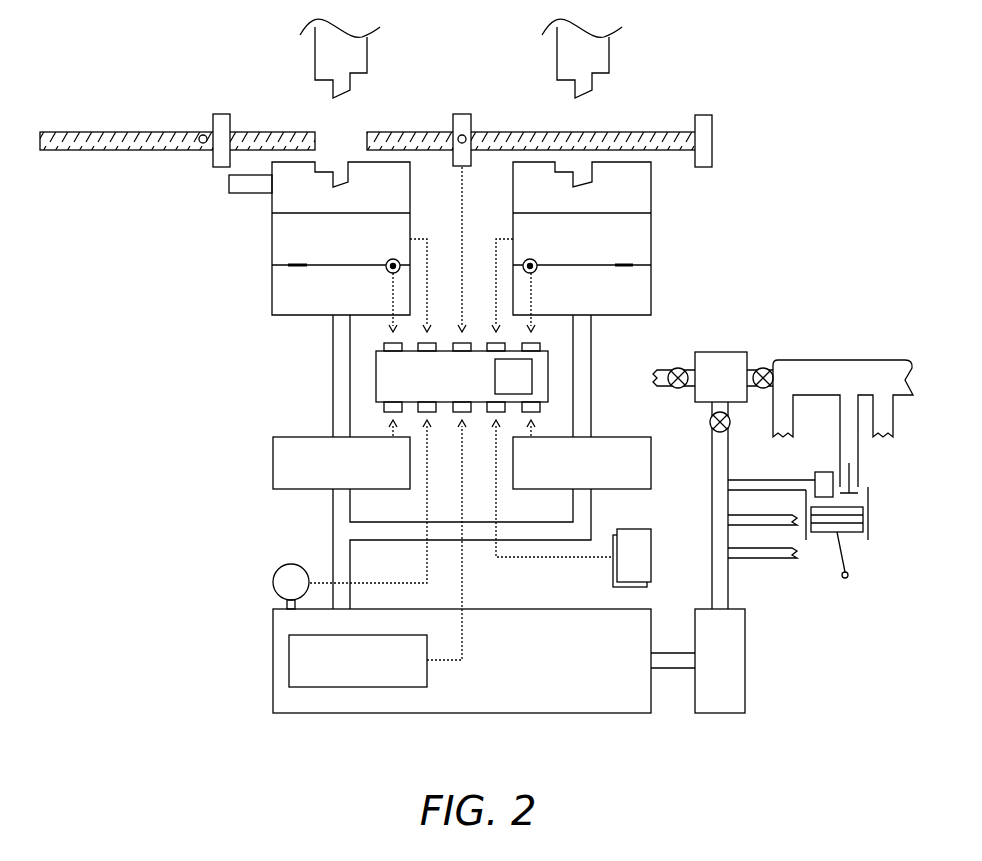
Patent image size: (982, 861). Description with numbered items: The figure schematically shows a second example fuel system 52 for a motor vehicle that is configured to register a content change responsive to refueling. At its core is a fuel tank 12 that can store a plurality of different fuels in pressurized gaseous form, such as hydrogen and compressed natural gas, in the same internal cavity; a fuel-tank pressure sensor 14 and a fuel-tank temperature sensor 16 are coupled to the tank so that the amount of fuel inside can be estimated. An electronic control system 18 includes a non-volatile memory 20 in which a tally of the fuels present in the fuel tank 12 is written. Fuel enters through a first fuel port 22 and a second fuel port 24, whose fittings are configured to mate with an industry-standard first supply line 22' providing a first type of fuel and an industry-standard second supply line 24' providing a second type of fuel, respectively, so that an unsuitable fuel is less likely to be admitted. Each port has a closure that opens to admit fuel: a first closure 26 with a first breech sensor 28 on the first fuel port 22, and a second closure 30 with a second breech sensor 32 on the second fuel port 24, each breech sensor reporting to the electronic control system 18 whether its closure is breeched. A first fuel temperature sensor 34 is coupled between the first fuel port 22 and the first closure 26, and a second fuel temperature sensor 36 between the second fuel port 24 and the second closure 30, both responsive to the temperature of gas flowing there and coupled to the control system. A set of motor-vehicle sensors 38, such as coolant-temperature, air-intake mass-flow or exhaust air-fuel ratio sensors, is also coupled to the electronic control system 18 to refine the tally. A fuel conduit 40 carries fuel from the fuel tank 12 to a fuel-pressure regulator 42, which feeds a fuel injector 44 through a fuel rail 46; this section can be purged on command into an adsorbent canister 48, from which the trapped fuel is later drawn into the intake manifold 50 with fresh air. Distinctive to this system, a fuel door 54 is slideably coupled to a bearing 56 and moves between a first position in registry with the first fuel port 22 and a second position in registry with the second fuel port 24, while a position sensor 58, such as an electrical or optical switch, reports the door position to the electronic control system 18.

The fuel tank 12 is at (496, 674).
The fuel-tank pressure sensor 14 is at (280, 592).
The fuel-tank temperature sensor 16 is at (346, 674).
The electronic control system 18 is at (451, 387).
The memory 20 is at (502, 387).
The first fuel port 22 is at (319, 238).
The first supply line 22' is at (340, 58).
The second fuel port 24 is at (582, 238).
The second supply line 24' is at (582, 58).
The first closure 26 is at (315, 267).
The first breech sensor 28 is at (329, 302).
The second closure 30 is at (607, 267).
The second breech sensor 32 is at (571, 302).
The first fuel temperature sensor 34 is at (329, 251).
The second fuel temperature sensor 36 is at (571, 251).
The set of motor-vehicle sensors 38 is at (623, 566).
The fuel conduit 40 is at (687, 670).
The fuel-pressure regulator 42 is at (709, 674).
The fuel injector 44 is at (824, 472).
The fuel rail 46 is at (712, 455).
The adsorbent canister 48 is at (709, 389).
The intake manifold 50 is at (827, 389).
The fuel system 52 is at (119, 444).
The fuel door 54 is at (143, 132).
The bearing 56 is at (221, 167).
The position sensor 58 is at (461, 114).